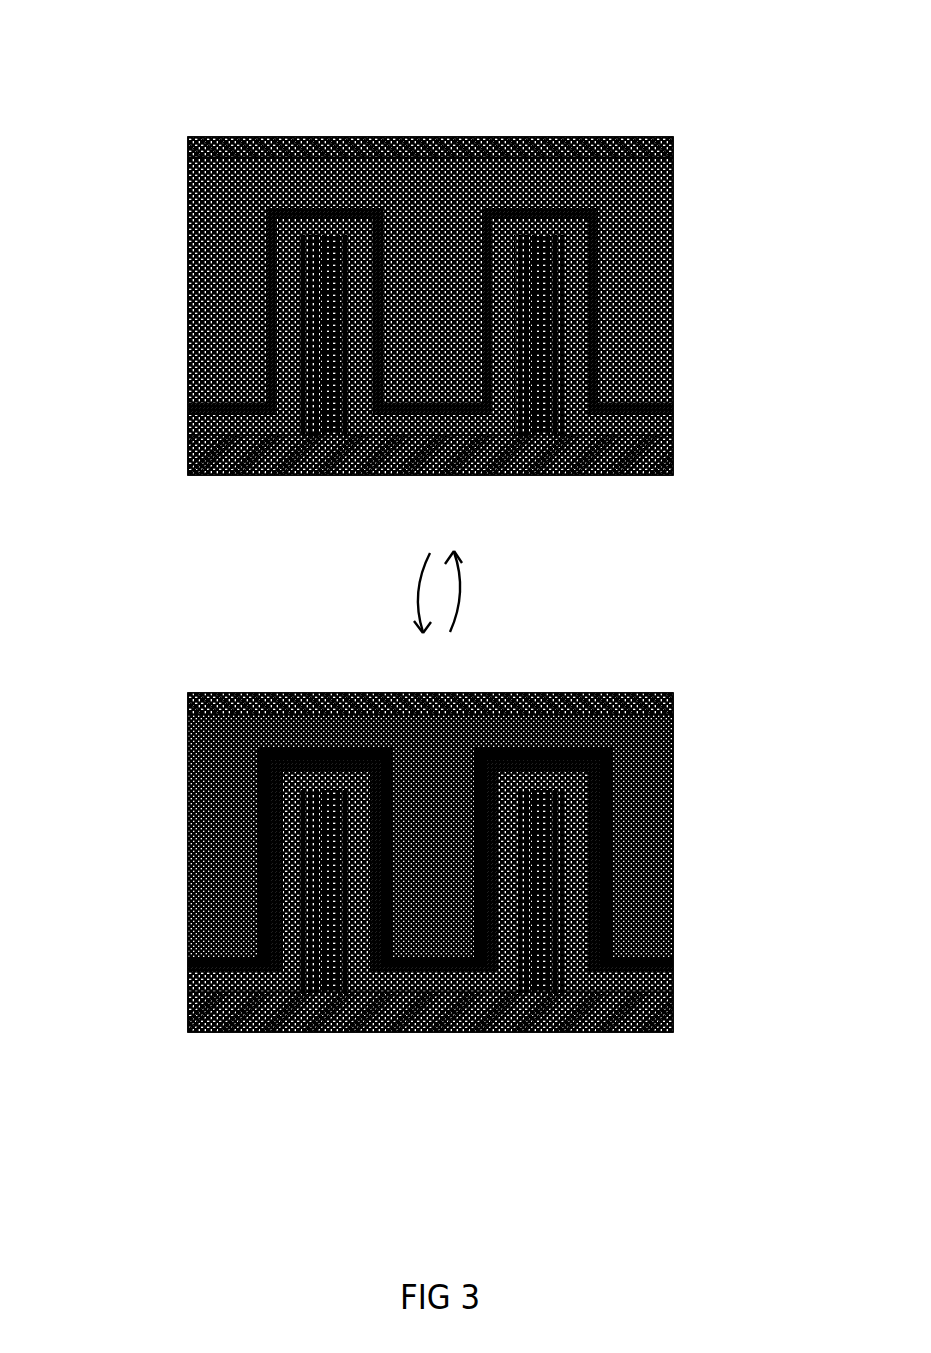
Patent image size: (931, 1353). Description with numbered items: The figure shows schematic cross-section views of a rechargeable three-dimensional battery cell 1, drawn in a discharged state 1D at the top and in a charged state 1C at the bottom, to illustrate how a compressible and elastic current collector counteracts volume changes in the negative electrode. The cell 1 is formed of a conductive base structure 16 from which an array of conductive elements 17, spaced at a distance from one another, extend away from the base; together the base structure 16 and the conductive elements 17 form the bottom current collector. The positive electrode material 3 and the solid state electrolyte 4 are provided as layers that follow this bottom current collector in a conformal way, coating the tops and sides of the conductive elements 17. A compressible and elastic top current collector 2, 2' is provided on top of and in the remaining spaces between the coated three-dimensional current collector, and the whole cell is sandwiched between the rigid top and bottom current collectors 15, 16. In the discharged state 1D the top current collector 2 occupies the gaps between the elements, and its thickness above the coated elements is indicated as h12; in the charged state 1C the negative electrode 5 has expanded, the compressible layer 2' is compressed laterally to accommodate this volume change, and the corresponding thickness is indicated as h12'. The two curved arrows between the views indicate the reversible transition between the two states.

The rechargeable battery cell 1 is at (446, 33).
The discharged state 1D is at (157, 111).
The charged state 1C is at (157, 679).
The rigid top current collector 15 is at (232, 147).
The compressible and elastic top current collector 2 is at (395, 280).
The compressible and elastic top current collector 2' is at (393, 836).
The conductive elements 17 is at (315, 278).
The positive electrode material 3 is at (285, 320).
The solid state electrolyte 4 is at (270, 388).
The negative electrode 5 is at (262, 915).
The base structure 16 is at (232, 461).
The height of layer 2 above element h12 is at (708, 184).
The height of modified layer 2' above element h12' is at (712, 732).